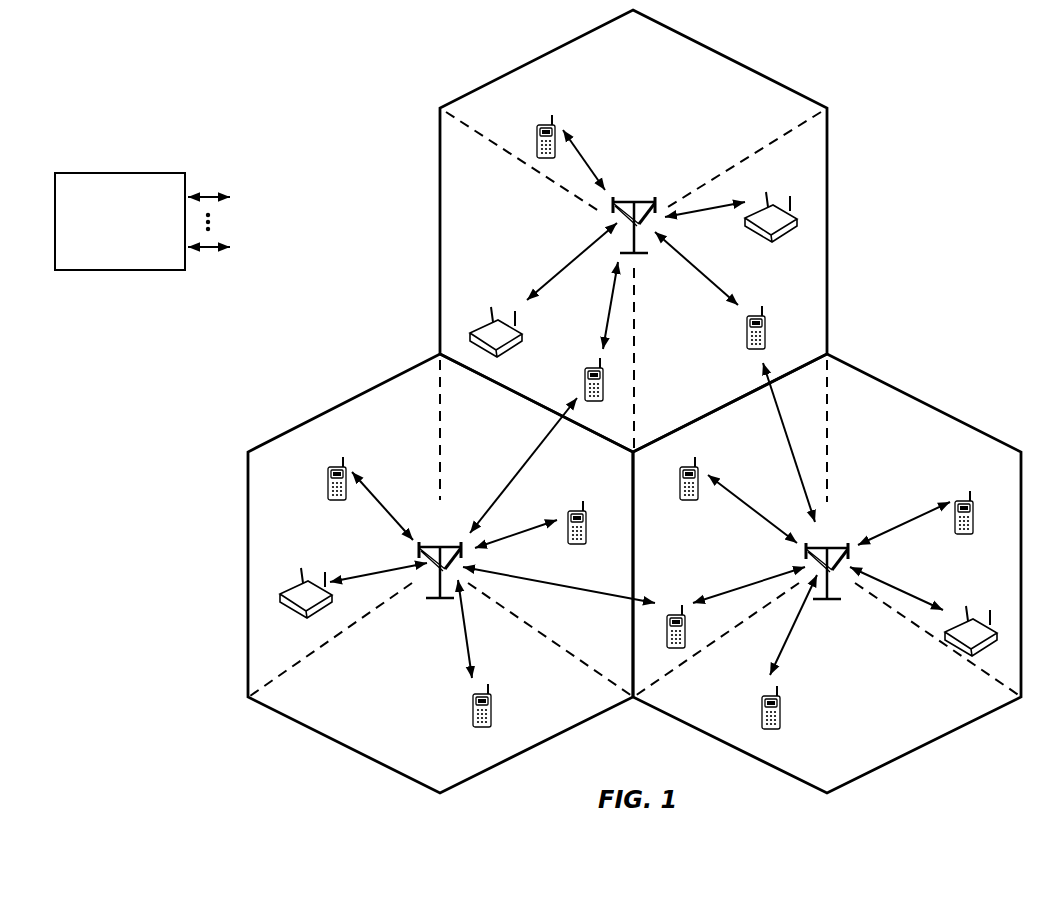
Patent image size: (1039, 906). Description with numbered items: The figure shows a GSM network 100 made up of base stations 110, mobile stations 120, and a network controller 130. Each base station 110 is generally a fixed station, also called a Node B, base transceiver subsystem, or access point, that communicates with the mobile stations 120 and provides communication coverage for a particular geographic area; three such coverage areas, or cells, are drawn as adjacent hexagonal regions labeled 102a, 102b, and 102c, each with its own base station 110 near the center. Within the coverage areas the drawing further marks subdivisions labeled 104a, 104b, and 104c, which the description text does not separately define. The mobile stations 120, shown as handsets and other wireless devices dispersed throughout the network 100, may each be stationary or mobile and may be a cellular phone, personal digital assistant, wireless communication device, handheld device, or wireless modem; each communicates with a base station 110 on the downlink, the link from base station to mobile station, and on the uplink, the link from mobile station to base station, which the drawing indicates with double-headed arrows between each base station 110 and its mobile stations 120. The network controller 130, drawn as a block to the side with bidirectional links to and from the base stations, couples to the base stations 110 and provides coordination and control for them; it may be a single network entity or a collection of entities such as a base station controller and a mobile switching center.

The GSM network 100 is at (960, 71).
The geographic area 102a is at (733, 59).
The geographic area 102b is at (344, 402).
The geographic area 102c is at (924, 403).
The sector 104a is at (655, 66).
The sector 104b is at (494, 204).
The sector 104c is at (719, 391).
The base station 110 is at (628, 202).
The mobile station 120 is at (537, 131).
The network controller 130 is at (111, 173).